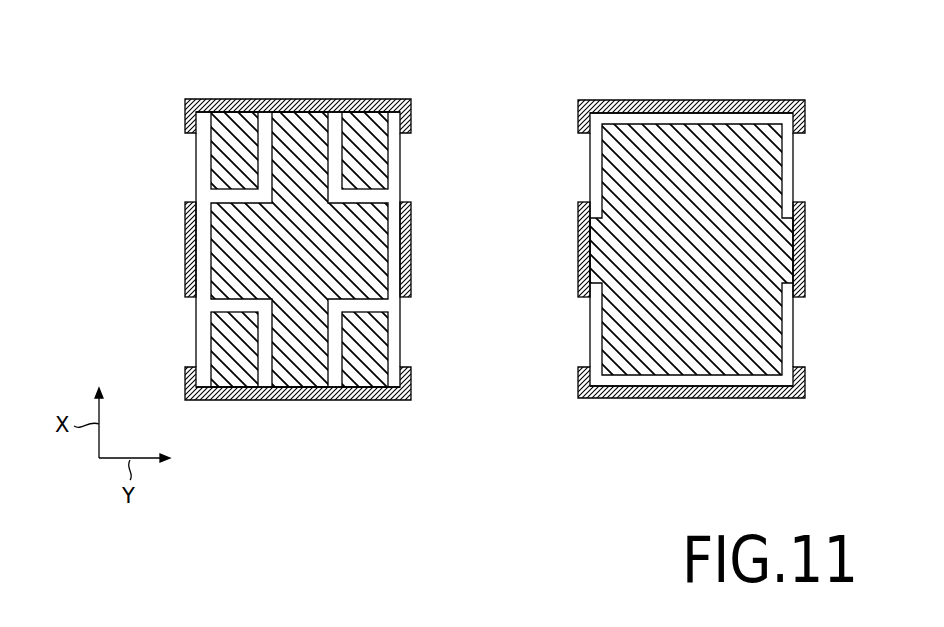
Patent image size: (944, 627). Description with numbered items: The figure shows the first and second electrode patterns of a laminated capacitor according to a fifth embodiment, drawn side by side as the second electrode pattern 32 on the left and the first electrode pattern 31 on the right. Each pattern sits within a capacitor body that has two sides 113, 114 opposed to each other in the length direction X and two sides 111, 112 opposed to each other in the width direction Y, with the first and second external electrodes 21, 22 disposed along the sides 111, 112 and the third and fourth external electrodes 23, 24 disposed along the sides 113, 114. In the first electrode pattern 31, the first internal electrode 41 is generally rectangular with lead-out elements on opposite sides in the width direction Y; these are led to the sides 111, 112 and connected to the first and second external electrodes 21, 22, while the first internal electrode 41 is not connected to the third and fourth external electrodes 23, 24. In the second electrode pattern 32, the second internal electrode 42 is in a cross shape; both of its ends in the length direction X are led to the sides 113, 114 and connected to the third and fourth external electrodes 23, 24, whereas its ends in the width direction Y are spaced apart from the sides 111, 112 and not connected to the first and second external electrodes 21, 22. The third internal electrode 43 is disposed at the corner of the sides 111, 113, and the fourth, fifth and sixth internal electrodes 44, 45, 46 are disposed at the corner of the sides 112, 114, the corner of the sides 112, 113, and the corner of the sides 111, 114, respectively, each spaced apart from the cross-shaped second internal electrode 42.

The second electrode pattern 32 is at (93, 137).
The first electrode pattern 31 is at (535, 137).
The first external electrode 21 is at (189, 257).
The second external electrode 22 is at (410, 242).
The third external electrode 23 is at (302, 400).
The fourth external electrode 24 is at (291, 99).
The side of capacitor body 111 is at (196, 186).
The side of capacitor body 112 is at (401, 186).
The side of capacitor body 113 is at (235, 400).
The side of capacitor body 114 is at (355, 99).
The first internal electrode 41 is at (769, 322).
The second internal electrode 42 is at (317, 370).
The third internal electrode 43 is at (226, 334).
The fourth internal electrode 44 is at (382, 156).
The fifth internal electrode 45 is at (377, 340).
The sixth internal electrode 46 is at (224, 150).